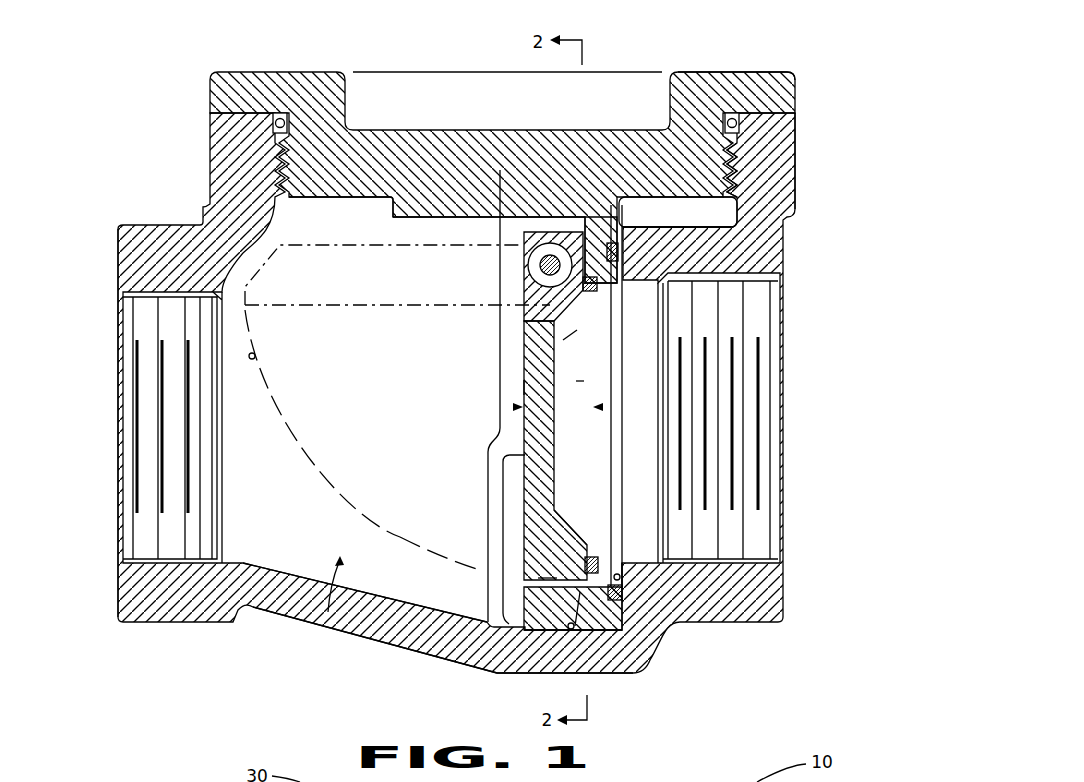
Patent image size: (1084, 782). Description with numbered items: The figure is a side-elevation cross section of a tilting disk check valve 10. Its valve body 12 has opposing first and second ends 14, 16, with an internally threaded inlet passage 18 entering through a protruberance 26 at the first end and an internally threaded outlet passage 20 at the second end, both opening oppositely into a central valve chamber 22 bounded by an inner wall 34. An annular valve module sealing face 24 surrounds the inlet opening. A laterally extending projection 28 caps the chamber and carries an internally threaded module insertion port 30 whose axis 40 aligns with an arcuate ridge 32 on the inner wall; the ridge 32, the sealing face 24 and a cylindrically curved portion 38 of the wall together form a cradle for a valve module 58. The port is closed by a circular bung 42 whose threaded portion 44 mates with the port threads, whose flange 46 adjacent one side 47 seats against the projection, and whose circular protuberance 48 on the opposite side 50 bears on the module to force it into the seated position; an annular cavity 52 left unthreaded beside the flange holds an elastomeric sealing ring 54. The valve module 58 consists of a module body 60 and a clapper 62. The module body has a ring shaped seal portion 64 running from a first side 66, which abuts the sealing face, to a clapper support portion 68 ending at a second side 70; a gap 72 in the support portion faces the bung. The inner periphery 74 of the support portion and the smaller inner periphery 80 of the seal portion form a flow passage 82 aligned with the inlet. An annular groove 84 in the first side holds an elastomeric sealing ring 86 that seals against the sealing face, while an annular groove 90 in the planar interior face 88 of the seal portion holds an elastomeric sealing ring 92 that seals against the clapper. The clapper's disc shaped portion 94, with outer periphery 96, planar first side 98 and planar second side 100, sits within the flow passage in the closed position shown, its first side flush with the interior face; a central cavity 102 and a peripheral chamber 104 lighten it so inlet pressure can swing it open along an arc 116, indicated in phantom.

The tilting disk check valve 10 is at (662, 58).
The valve body 12 is at (783, 243).
The first end 14 is at (797, 172).
The second end 16 is at (118, 263).
The inlet passage 18 is at (752, 278).
The outlet passage 20 is at (160, 302).
The valve chamber 22 is at (320, 615).
The valve module sealing face 24 is at (621, 575).
The protruberance 26 is at (663, 236).
The laterally extending projection 28 is at (738, 162).
The module insertion port 30 is at (740, 198).
The arcuate ridge 32 is at (509, 503).
The inner wall 34 is at (305, 418).
The portion of the inner wall 38 is at (566, 632).
The axis 40 is at (524, 364).
The circular bung 42 is at (281, 77).
The threaded portion 44 is at (337, 187).
The flange 46 is at (800, 82).
The one side 47 is at (741, 70).
The circular protuberance 48 is at (430, 214).
The opposite side 50 is at (374, 202).
The annular cavity 52 is at (272, 117).
The elastomeric sealing ring 54 is at (275, 125).
The valve module 58 is at (517, 339).
The module body 60 is at (531, 630).
The clapper 62 is at (513, 407).
The seal portion 64 is at (619, 285).
The first side 66 is at (620, 224).
The clapper support portion 68 is at (525, 592).
The second side 70 is at (524, 609).
The gap 72 is at (531, 236).
The inner periphery of the clapper support portion 74 is at (545, 578).
The inner periphery of the seal portion 80 is at (614, 574).
The flow passage 82 is at (603, 407).
The annular groove 84 is at (617, 262).
The elastomeric sealing ring 86 is at (616, 240).
The interior face 88 is at (573, 312).
The annular groove 90 is at (607, 290).
The elastomeric sealing ring 92 is at (583, 284).
The disc shaped portion 94 is at (533, 515).
The outer periphery 96 is at (580, 592).
The first side 98 is at (593, 556).
The second side 100 is at (527, 388).
The central cavity 102 is at (575, 371).
The chamber 104 is at (478, 566).
The arc 116 is at (255, 355).